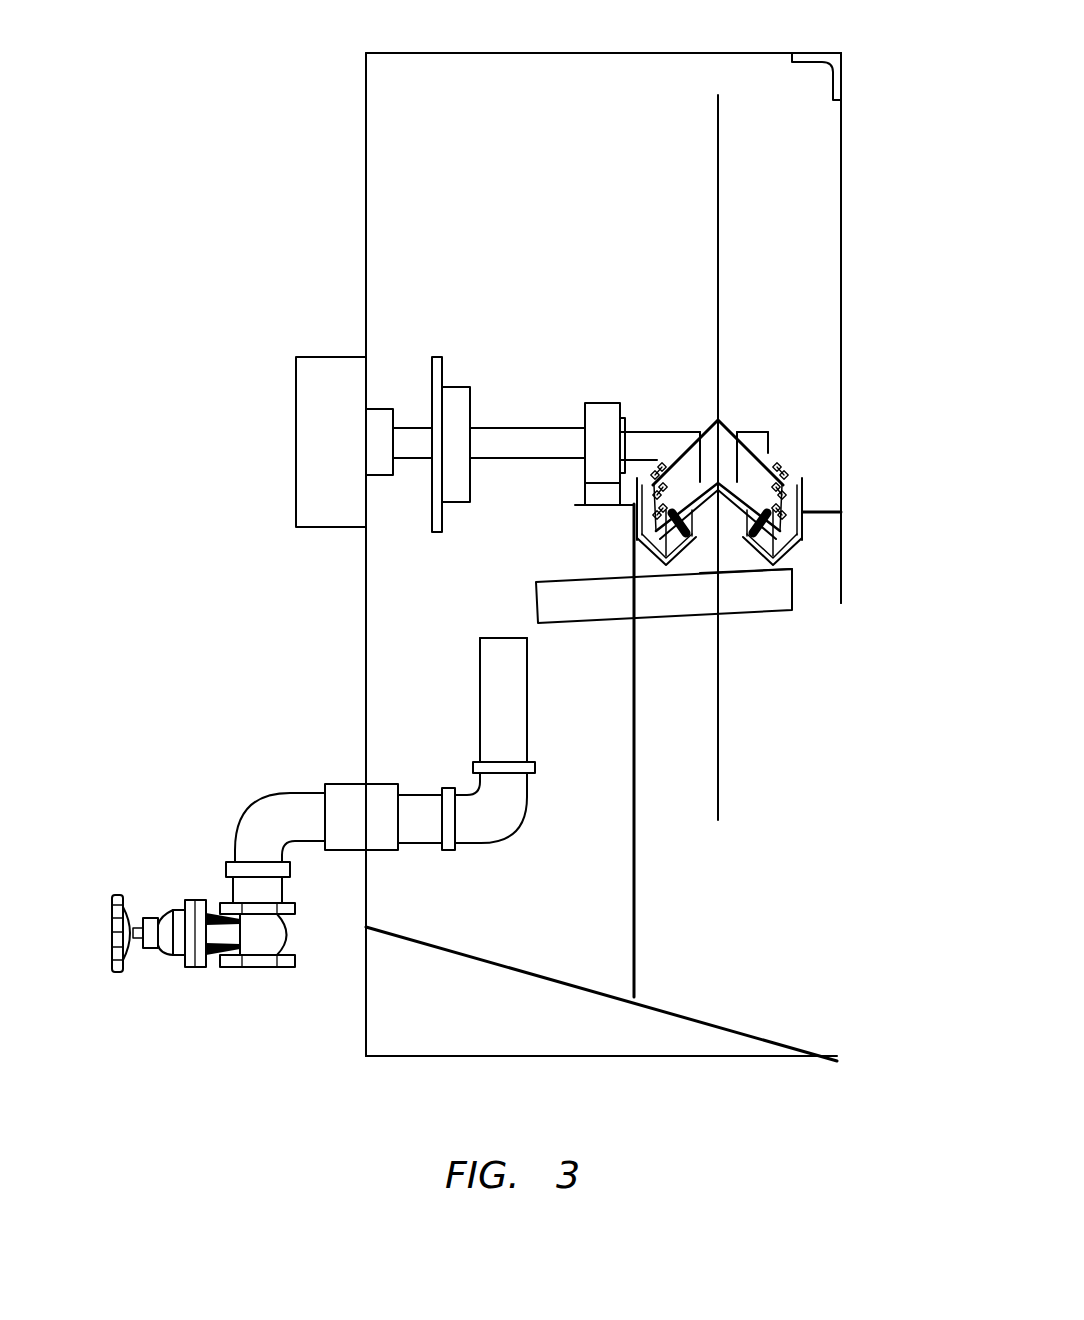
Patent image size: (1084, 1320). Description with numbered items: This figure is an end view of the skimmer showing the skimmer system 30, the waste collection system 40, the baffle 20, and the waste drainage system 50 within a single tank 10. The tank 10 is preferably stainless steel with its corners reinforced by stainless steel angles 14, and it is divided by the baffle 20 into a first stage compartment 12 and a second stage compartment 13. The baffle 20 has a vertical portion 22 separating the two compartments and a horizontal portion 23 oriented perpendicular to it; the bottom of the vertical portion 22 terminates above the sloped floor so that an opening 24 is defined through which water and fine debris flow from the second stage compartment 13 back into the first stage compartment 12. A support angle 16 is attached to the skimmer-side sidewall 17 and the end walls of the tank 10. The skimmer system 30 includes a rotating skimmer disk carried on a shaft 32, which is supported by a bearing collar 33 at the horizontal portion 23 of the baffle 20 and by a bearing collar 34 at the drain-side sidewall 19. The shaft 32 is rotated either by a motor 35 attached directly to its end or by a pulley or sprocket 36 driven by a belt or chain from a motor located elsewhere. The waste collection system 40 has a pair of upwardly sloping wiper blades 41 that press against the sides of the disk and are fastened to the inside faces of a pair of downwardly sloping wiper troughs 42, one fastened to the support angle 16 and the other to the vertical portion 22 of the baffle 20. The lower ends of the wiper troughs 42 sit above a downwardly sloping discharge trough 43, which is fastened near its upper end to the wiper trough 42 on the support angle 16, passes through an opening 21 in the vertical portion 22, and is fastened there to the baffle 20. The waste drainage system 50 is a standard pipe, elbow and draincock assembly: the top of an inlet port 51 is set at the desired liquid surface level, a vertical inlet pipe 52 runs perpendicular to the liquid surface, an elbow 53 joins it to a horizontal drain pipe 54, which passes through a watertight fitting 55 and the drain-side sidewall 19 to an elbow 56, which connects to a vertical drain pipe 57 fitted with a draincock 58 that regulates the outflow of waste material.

The tank 10 is at (623, 528).
The first stage compartment 12 is at (750, 708).
The second stage compartment 13 is at (537, 880).
The stainless steel angles 14 is at (835, 52).
The support angle 16 is at (818, 503).
The skimmer-side sidewall 17 is at (843, 262).
The drain-side sidewall 19 is at (366, 205).
The baffle 20 is at (601, 578).
The opening 21 is at (647, 612).
The vertical portion 22 is at (636, 905).
The horizontal portion 23 is at (598, 508).
The opening 24 is at (640, 1000).
The skimmer system 30 is at (690, 148).
The shaft 32 is at (524, 438).
The bearing collar 33 is at (606, 410).
The bearing collar 34 is at (390, 420).
The motor 35 is at (330, 368).
The pulley or sprocket 36 is at (460, 395).
The waste collection system 40 is at (763, 513).
The wiper blades 41 is at (692, 450).
The wiper troughs 42 is at (760, 540).
The discharge trough 43 is at (745, 597).
The waste drainage system 50 is at (345, 797).
The inlet port 51 is at (497, 636).
The vertical inlet pipe 52 is at (507, 695).
The elbow 53 is at (498, 815).
The horizontal drain pipe 54 is at (425, 805).
The watertight fitting 55 is at (348, 848).
The elbow 56 is at (268, 818).
The vertical drain pipe 57 is at (226, 890).
The draincock 58 is at (286, 948).